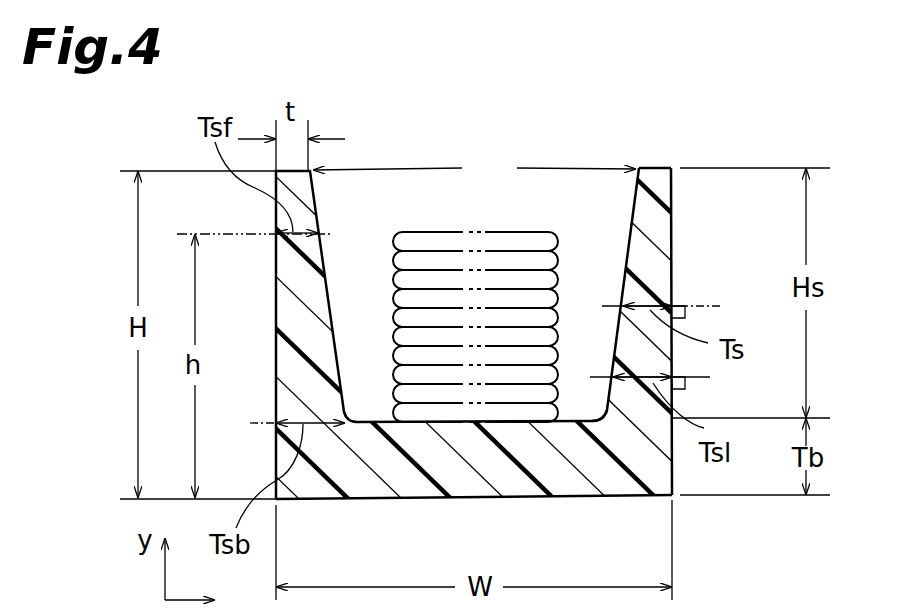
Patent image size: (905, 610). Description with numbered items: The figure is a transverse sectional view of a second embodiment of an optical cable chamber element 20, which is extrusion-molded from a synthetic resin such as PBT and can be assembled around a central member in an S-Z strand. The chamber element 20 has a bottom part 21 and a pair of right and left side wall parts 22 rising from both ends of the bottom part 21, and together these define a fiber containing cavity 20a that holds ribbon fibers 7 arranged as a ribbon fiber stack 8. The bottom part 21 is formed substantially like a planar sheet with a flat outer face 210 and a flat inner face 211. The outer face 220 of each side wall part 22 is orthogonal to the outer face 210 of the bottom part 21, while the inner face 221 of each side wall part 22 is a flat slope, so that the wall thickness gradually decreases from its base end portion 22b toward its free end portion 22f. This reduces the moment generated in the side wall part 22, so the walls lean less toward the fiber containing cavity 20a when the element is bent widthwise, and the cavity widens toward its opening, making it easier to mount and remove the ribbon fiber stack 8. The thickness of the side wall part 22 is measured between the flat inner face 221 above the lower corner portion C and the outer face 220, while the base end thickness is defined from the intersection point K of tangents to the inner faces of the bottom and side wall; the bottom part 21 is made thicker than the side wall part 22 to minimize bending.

The chamber element 20 is at (629, 101).
The fiber containing cavity 20a is at (418, 216).
The bottom part 21 is at (474, 494).
The outer face of the bottom part 210 is at (370, 500).
The inner face of the bottom part 211 is at (592, 413).
The side wall part 22 is at (647, 334).
The outer face of the side wall part 220 is at (672, 283).
The inner face of the side wall part 221 is at (632, 215).
The free end portion 22f is at (657, 168).
The base end portion 22b is at (296, 335).
The ribbon fibers 7 is at (397, 240).
The ribbon fiber stack 8 is at (475, 310).
The intersection point K is at (349, 420).
The lower corner portion C is at (598, 416).